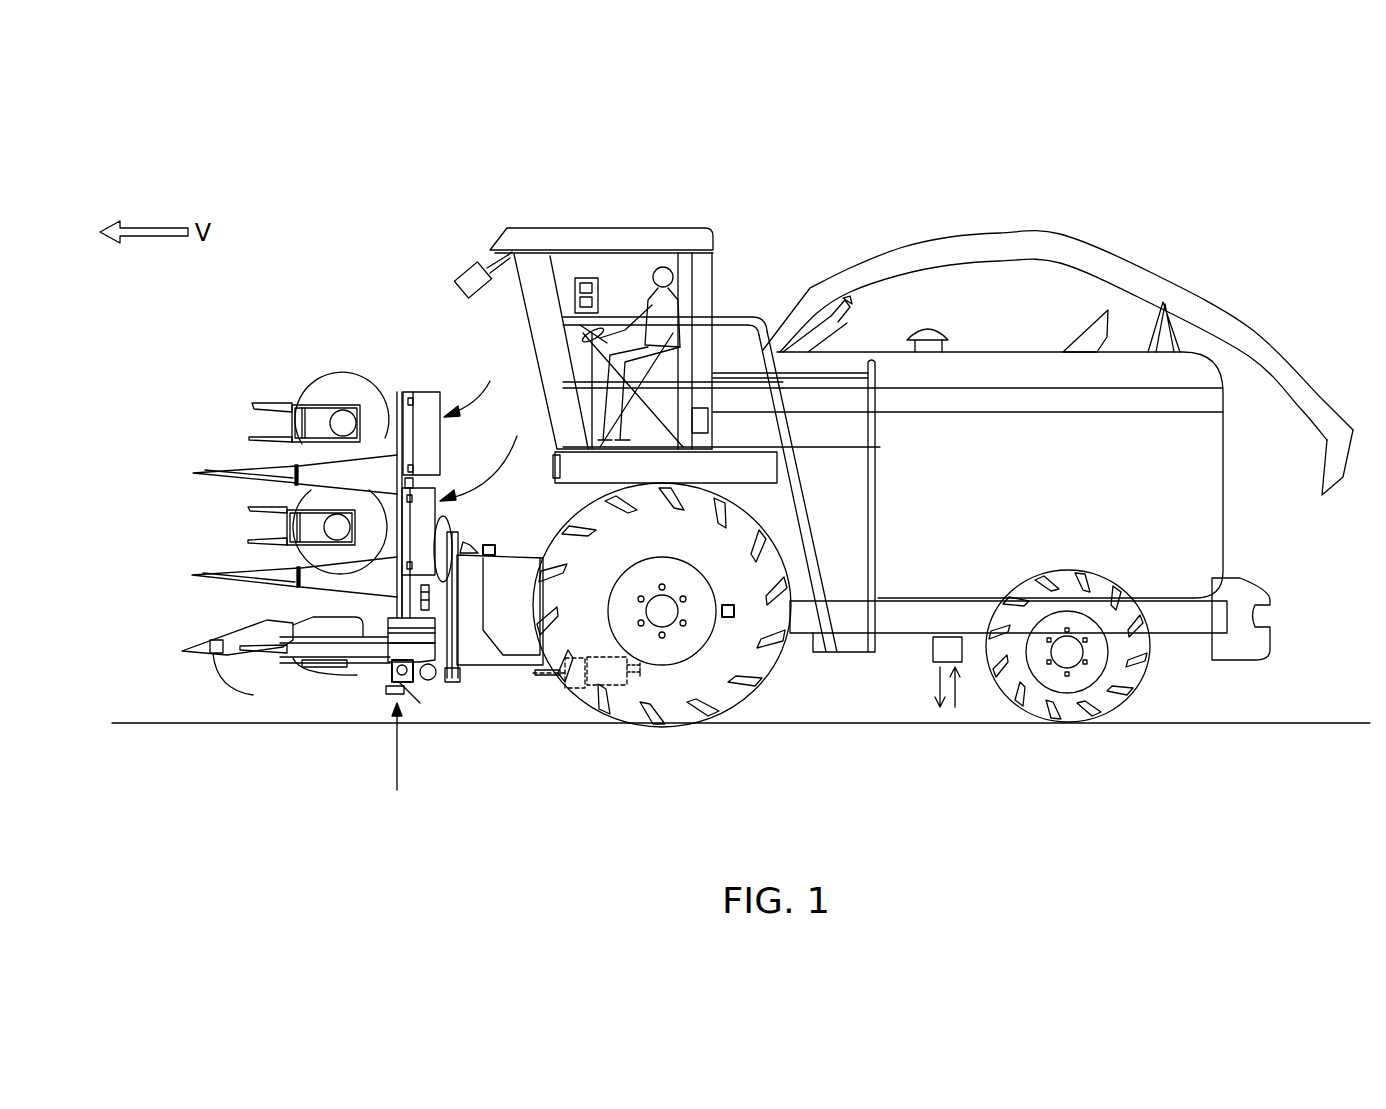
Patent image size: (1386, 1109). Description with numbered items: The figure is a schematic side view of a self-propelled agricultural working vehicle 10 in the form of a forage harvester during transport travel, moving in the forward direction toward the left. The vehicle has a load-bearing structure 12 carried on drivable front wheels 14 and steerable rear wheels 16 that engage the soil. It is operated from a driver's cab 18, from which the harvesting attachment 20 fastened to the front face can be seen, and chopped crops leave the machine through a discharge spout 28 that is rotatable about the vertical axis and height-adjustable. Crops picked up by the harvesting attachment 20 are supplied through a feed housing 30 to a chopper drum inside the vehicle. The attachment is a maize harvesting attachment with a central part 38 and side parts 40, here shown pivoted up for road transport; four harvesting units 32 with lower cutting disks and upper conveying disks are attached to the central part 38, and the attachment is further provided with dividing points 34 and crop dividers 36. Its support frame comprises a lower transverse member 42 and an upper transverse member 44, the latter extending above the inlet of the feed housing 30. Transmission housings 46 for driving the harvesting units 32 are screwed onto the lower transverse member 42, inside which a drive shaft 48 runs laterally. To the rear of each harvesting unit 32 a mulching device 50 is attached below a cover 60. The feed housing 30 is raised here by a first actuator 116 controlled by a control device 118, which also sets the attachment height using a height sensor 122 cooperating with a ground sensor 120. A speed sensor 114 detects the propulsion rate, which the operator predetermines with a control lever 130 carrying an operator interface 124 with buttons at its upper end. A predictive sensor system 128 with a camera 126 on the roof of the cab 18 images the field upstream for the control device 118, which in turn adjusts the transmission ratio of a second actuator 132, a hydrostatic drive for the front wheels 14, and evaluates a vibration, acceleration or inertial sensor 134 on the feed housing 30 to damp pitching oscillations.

The working vehicle 10 is at (1007, 430).
The load-bearing structure 12 is at (920, 620).
The front wheels 14 is at (642, 695).
The rear wheels 16 is at (1103, 693).
The driver's cab 18 is at (587, 268).
The harvesting attachment 20 is at (355, 538).
The discharge spout 28 is at (1047, 248).
The feed housing 30 is at (487, 655).
The harvesting units 32 is at (323, 628).
The dividing points 34 is at (260, 472).
The crop dividers 36 is at (253, 437).
The central part 38 is at (373, 673).
The side parts 40 is at (441, 478).
The lower transverse member 42 is at (410, 683).
The upper transverse member 44 is at (458, 545).
The transmission housings 46 is at (342, 422).
The drive shaft 48 is at (433, 676).
The mulching device 50 is at (461, 588).
The cover 60 is at (420, 414).
The speed sensor 114 is at (937, 650).
The first actuator 116 is at (610, 687).
The control device 118 is at (699, 408).
The ground sensor 120 is at (215, 675).
The height sensor 122 is at (222, 633).
The operator interface 124 is at (599, 287).
The camera 126 is at (478, 266).
The predictive sensor system 128 is at (428, 244).
The control lever 130 is at (570, 313).
The second actuator 132 is at (738, 593).
The sensor 134 is at (497, 548).